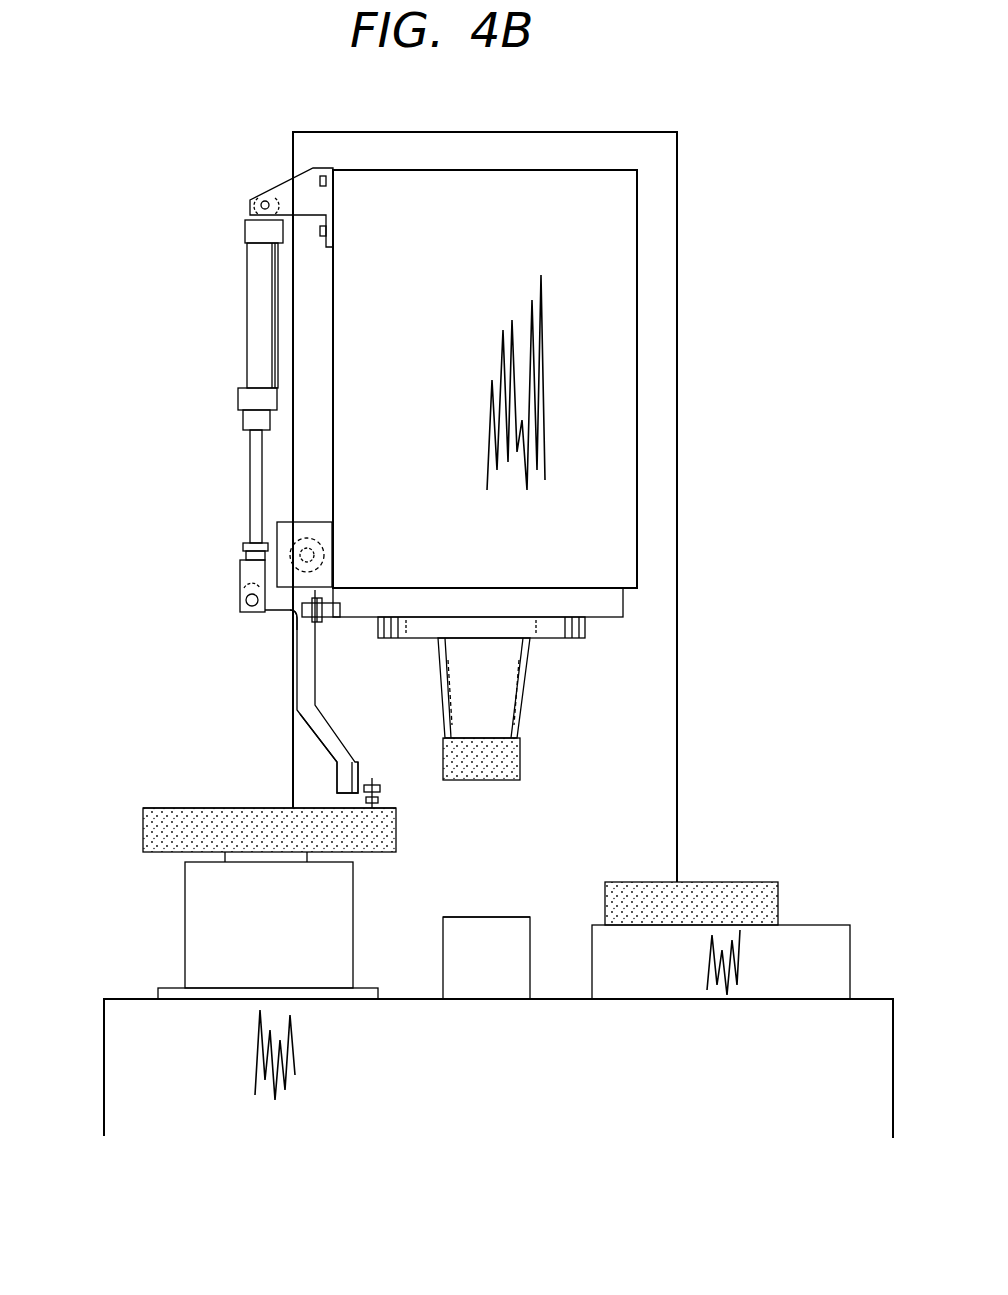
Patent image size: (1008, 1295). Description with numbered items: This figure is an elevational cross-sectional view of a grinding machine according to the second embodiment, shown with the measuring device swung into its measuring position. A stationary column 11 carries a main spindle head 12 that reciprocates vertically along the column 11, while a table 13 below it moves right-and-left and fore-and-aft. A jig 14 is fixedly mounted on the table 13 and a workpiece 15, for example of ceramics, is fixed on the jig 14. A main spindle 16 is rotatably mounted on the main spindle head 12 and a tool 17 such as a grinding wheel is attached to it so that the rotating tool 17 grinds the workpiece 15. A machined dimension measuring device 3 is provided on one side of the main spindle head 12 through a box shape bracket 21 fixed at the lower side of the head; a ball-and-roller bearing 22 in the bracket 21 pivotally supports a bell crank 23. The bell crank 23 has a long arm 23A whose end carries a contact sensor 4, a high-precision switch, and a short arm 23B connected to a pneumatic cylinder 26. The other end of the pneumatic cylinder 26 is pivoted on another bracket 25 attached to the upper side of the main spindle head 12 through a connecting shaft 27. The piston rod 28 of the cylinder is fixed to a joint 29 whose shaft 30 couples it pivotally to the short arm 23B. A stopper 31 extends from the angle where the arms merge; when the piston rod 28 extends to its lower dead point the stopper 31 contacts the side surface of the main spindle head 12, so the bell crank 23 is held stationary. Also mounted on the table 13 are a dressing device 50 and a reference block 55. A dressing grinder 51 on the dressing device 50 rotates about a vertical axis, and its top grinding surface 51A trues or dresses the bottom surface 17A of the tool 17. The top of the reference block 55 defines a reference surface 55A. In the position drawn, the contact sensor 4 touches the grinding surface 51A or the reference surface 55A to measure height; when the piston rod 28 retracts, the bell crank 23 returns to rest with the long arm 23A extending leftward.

The machined dimension measuring device 3 is at (138, 377).
The stationary column 11 is at (670, 305).
The main spindle head 12 is at (633, 360).
The table 13 is at (128, 1000).
The jig 14 is at (815, 925).
The workpiece 15 is at (740, 882).
The main spindle 16 is at (582, 630).
The tool 17 is at (515, 695).
The bottom surface of the grinding tool 17A is at (505, 780).
The box shape bracket 21 is at (325, 530).
The ball-and-roller bearing 22 is at (325, 552).
The bell crank 23 is at (297, 680).
The long arm 23A is at (320, 748).
The short arm 23B is at (280, 613).
The bracket 25 is at (290, 185).
The pneumatic cylinder 26 is at (250, 285).
The connecting shaft 27 is at (255, 200).
The piston rod 28 is at (252, 465).
The joint 29 is at (240, 566).
The shaft 30 is at (240, 605).
The stopper 31 is at (336, 618).
The contact sensor 4 is at (380, 803).
The dressing device 50 is at (195, 892).
The dressing grinder 51 is at (143, 830).
The grinding surface 51A is at (160, 808).
The reference block 55 is at (445, 945).
The reference surface 55A is at (508, 917).